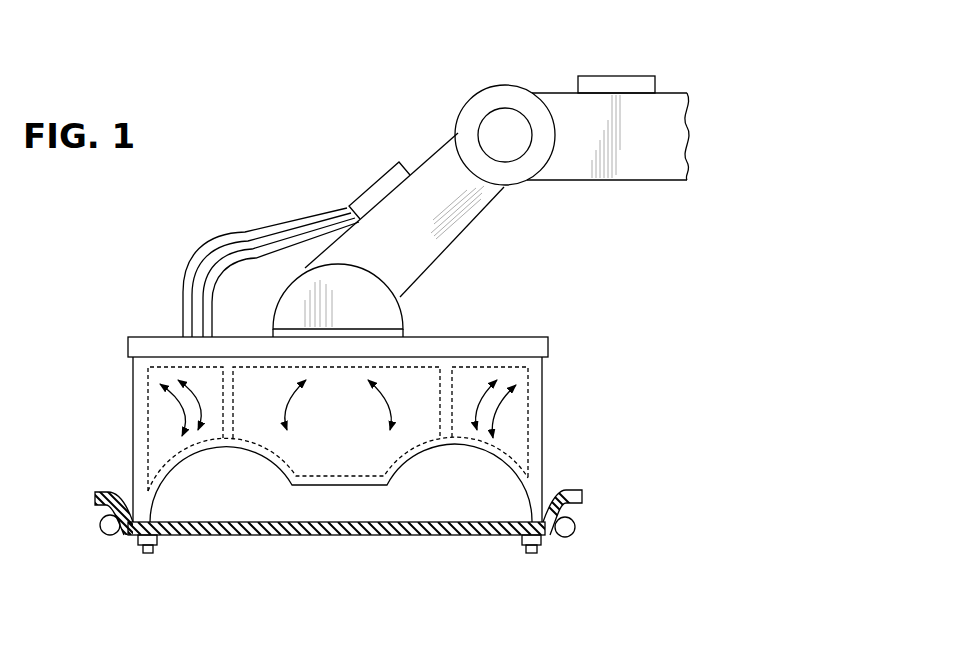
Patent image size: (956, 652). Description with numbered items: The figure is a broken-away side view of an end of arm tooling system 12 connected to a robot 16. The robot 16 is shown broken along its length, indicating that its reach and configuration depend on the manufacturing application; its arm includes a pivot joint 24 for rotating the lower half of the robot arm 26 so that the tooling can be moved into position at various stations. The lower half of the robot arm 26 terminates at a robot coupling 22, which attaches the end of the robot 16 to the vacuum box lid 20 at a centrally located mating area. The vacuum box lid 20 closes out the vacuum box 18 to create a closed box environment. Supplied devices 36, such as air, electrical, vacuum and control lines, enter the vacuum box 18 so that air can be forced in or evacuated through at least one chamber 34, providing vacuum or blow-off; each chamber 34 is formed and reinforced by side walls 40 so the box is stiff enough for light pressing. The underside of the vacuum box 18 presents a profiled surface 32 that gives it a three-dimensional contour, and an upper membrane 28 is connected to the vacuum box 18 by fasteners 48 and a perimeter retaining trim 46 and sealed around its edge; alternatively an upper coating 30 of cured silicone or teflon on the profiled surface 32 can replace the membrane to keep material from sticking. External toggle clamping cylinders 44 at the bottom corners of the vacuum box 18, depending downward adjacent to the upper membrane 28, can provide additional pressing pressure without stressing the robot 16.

The end of arm tooling system 12 is at (231, 155).
The robot 16 is at (632, 68).
The vacuum box 18 is at (570, 428).
The vacuum box lid 20 is at (548, 346).
The robot coupling 22 is at (400, 332).
The pivot joint 24 is at (522, 186).
The lower half of the robot arm 26 is at (463, 212).
The upper membrane 28 is at (407, 535).
The upper coating 30 is at (481, 455).
The profiled surface 32 is at (389, 478).
The chamber 34 is at (160, 405).
The supplied devices 36 is at (366, 172).
The side walls 40 is at (450, 393).
The external toggle clamping cylinders 44 is at (100, 527).
The perimeter retaining trim 46 is at (157, 540).
The fasteners 48 is at (148, 555).